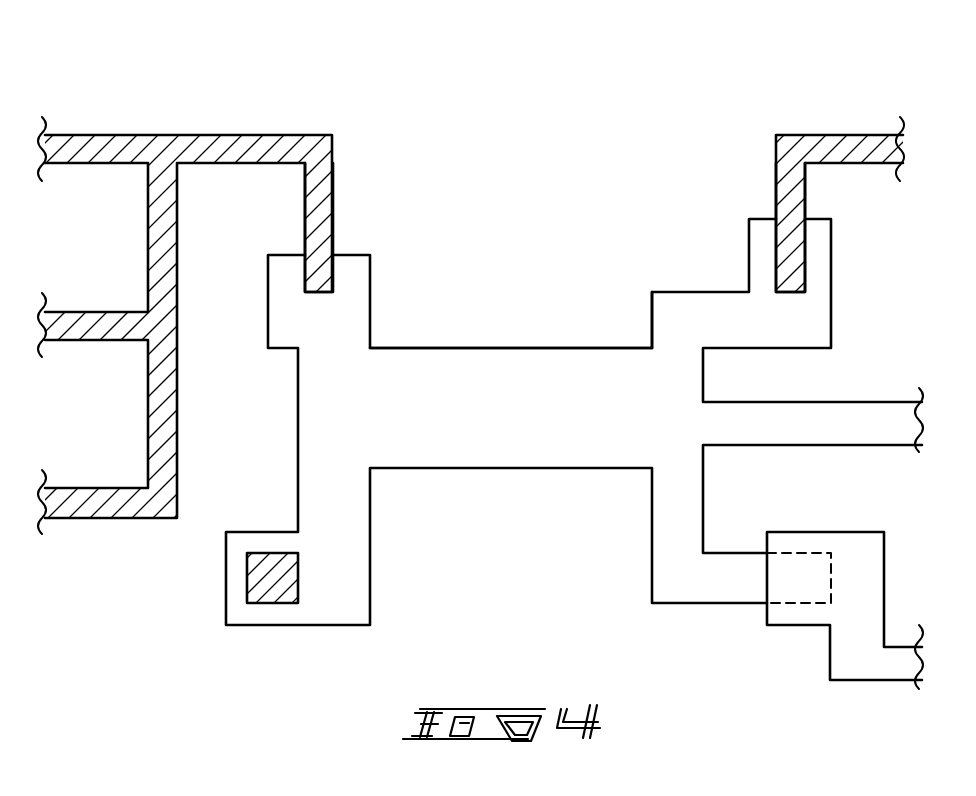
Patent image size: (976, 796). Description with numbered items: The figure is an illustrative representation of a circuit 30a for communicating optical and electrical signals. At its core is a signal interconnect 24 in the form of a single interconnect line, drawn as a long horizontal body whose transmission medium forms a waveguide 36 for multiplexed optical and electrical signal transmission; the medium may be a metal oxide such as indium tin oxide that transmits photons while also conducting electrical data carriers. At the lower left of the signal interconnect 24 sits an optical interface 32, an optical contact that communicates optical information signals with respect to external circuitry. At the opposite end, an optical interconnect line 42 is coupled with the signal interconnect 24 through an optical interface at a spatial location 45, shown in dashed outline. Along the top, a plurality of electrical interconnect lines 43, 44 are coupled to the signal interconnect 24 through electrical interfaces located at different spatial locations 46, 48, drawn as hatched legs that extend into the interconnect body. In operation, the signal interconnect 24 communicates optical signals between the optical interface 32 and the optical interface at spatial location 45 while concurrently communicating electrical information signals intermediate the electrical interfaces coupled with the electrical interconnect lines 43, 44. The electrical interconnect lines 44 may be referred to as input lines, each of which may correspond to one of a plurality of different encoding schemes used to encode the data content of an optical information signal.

The signal interconnect 24 is at (523, 429).
The circuit 30a is at (833, 107).
The optical interface 32 is at (270, 590).
The waveguide 36 is at (510, 348).
The optical interconnect line 42 is at (872, 680).
The electrical interconnect line 43 is at (867, 135).
The electrical interconnect lines 44 is at (63, 135).
The spatial location 45 is at (808, 605).
The spatial location 46 is at (322, 273).
The spatial location 48 is at (792, 272).